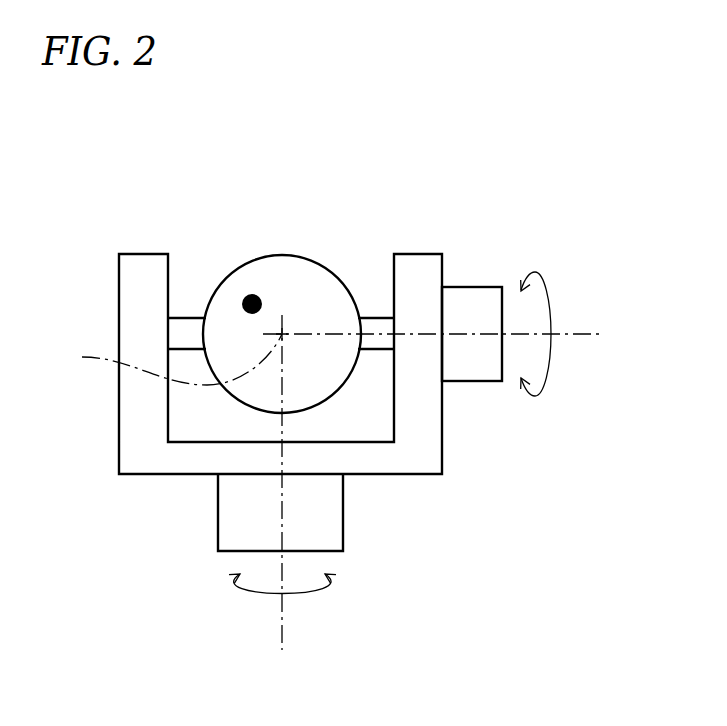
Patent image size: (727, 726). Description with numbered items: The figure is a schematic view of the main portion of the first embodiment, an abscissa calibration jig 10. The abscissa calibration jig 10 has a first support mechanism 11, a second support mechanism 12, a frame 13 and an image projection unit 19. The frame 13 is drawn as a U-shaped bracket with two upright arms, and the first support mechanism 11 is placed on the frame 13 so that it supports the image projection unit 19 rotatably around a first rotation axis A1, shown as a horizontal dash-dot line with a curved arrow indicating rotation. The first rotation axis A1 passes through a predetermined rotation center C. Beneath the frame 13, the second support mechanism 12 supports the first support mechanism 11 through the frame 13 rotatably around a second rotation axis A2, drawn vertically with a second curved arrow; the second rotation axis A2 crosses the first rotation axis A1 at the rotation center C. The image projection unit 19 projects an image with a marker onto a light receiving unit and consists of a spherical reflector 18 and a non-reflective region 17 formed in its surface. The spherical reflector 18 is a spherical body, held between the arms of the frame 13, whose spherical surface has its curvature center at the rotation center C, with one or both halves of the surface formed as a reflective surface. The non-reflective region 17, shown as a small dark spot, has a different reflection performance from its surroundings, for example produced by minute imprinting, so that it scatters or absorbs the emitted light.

The abscissa calibration jig 10 is at (146, 177).
The first support mechanism 11 is at (470, 287).
The second support mechanism 12 is at (328, 504).
The frame 13 is at (417, 253).
The non-reflective region 17 is at (252, 295).
The spherical reflector 18 is at (322, 290).
The image projection unit 19 is at (262, 225).
The first rotation axis A1 is at (448, 334).
The second rotation axis A2 is at (282, 500).
The rotation center C is at (174, 356).